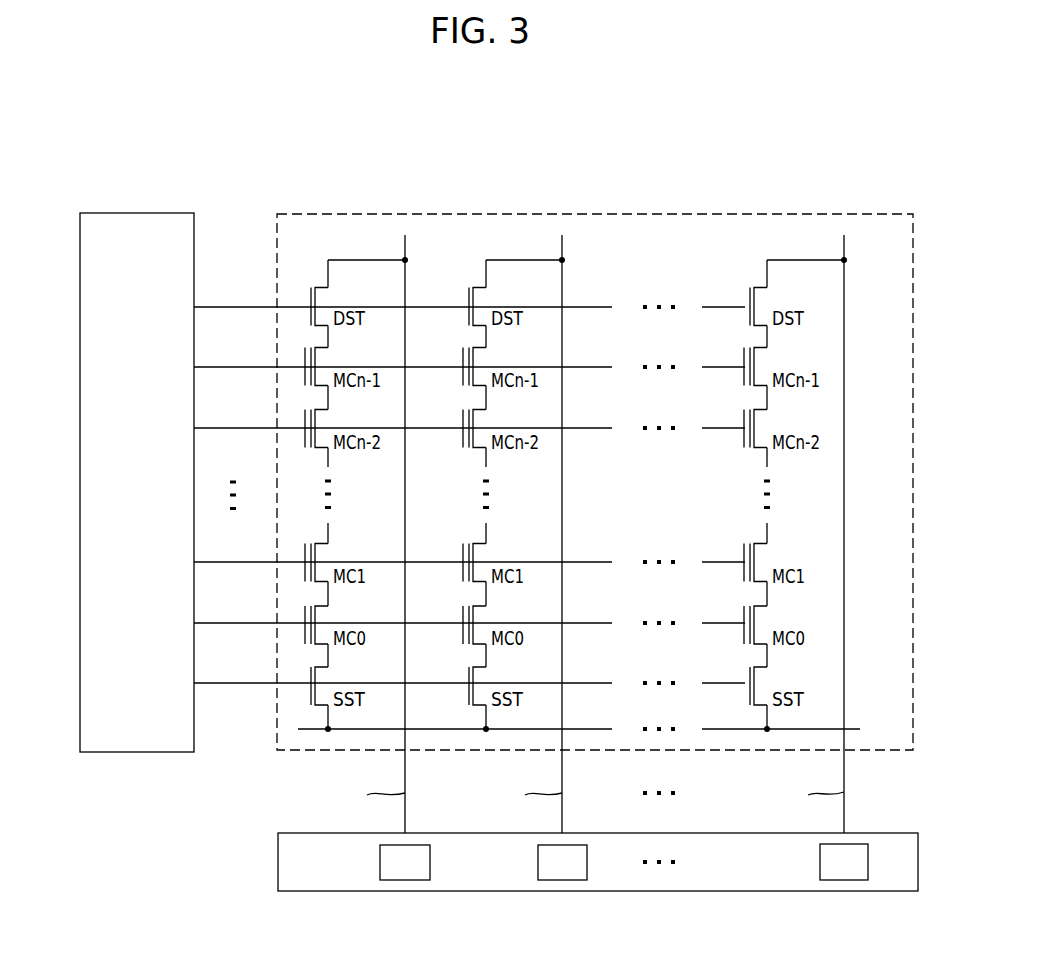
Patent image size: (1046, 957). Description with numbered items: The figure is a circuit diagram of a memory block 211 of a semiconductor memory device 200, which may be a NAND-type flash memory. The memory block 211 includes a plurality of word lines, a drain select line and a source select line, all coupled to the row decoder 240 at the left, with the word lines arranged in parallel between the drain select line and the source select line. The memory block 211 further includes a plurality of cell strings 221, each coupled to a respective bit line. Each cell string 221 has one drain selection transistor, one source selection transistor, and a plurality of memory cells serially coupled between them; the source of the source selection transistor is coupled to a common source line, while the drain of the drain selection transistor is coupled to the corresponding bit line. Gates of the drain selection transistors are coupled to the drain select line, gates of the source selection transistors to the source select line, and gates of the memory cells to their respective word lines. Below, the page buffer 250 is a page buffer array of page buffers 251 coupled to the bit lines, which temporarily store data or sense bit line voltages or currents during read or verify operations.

The semiconductor memory device 200 is at (890, 121).
The memory block 211 is at (595, 493).
The cell string 221 is at (316, 250).
The row decoder 240 is at (138, 213).
The page buffer 250 is at (564, 862).
The page buffer 251 is at (380, 864).